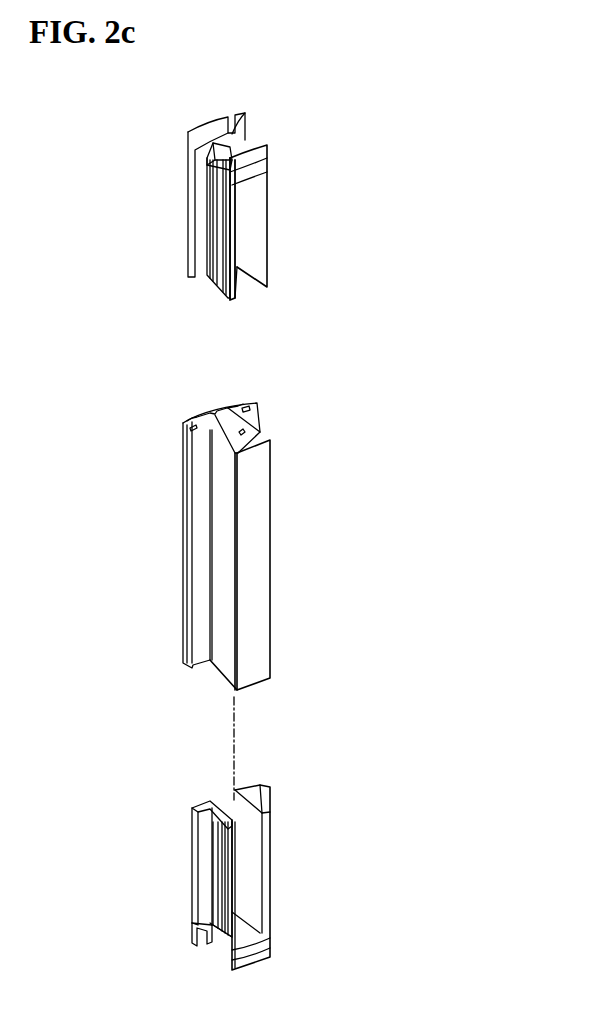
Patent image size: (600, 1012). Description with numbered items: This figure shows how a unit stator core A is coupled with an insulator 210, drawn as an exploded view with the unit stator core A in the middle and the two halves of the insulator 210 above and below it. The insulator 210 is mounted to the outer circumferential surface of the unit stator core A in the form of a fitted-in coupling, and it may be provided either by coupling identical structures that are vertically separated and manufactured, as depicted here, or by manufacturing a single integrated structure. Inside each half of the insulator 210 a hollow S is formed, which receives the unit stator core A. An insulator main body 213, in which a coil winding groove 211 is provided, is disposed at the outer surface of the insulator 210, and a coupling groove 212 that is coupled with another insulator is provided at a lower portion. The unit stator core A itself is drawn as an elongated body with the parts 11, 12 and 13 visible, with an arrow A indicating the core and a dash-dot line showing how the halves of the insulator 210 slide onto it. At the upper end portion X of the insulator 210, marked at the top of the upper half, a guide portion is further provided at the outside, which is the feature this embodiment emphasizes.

The first plate 11 is at (213, 492).
The top cap 12 is at (253, 417).
The second plate 13 is at (263, 527).
The insulator 210 is at (193, 542).
The coil winding groove 211 is at (215, 198).
The coupling groove 212 is at (207, 273).
The insulator main body 213 is at (108, 283).
The hollow S is at (247, 224).
The unit stator core A is at (320, 601).
The upper end portion X is at (187, 140).